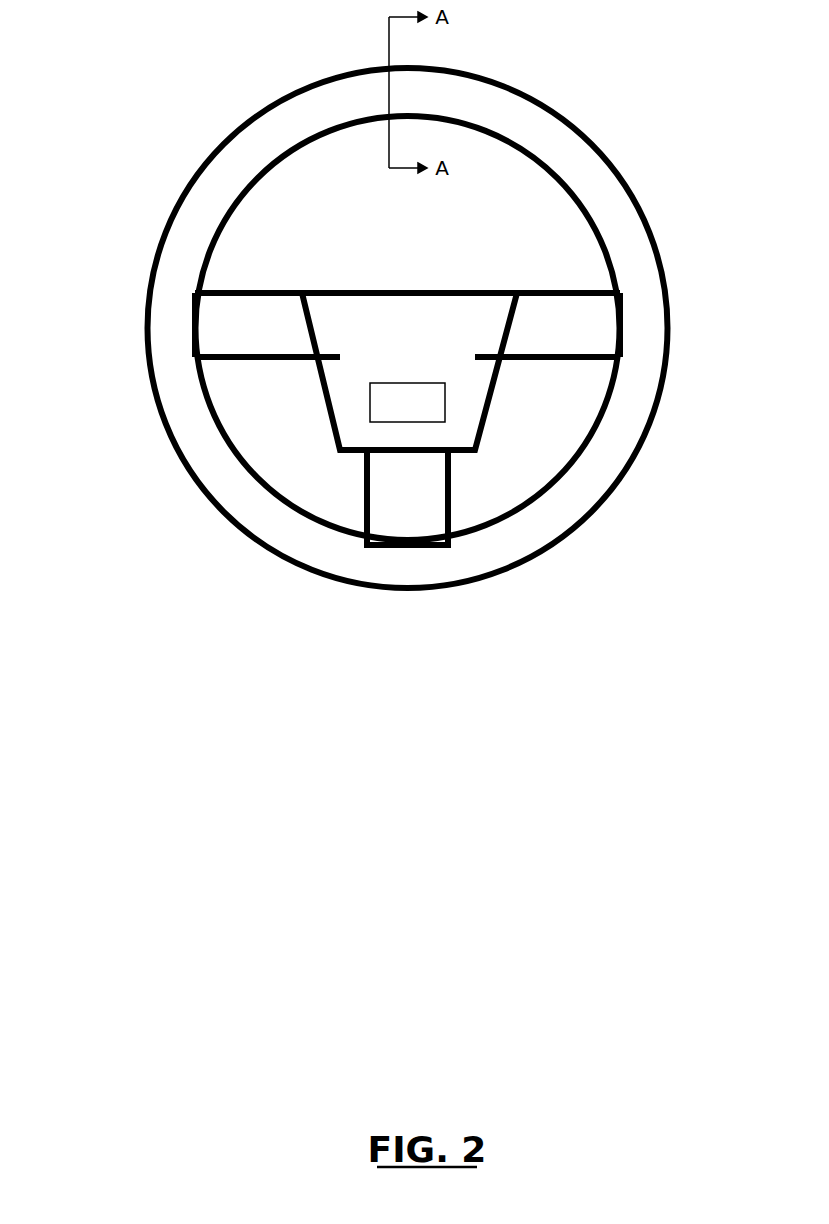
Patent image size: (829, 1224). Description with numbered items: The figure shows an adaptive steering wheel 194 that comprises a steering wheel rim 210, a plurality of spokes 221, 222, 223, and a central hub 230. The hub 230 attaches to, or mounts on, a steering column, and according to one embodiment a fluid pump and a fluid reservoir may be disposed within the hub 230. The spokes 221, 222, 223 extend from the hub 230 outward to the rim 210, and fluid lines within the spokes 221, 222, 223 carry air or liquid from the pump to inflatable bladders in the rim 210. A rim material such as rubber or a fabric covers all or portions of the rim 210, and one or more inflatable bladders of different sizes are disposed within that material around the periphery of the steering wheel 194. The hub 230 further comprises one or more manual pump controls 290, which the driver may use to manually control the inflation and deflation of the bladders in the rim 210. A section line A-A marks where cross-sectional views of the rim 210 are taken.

The adaptive steering wheel 194 is at (615, 793).
The steering wheel rim 210 is at (595, 477).
The spoke 221 is at (583, 328).
The spoke 222 is at (220, 328).
The spoke 223 is at (417, 515).
The hub 230 is at (485, 290).
The manual pump control 290 is at (428, 382).